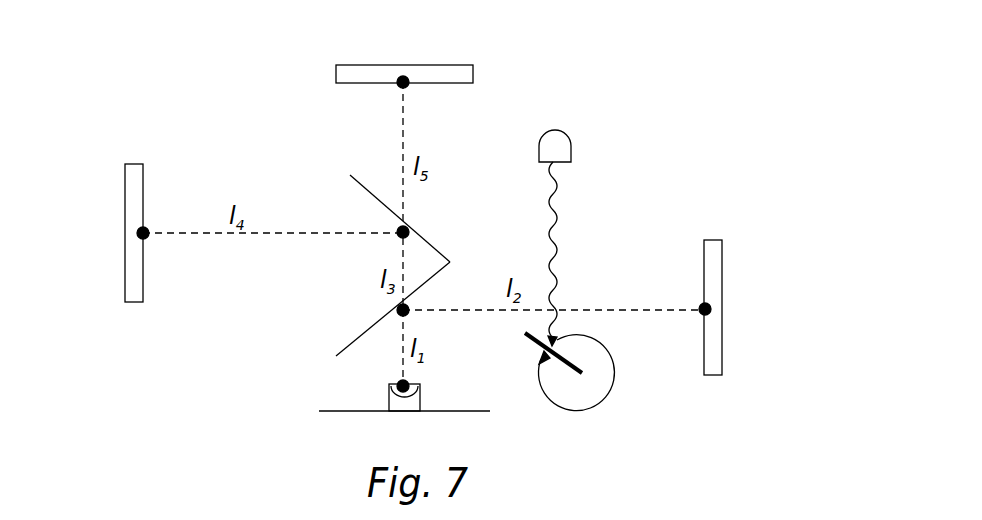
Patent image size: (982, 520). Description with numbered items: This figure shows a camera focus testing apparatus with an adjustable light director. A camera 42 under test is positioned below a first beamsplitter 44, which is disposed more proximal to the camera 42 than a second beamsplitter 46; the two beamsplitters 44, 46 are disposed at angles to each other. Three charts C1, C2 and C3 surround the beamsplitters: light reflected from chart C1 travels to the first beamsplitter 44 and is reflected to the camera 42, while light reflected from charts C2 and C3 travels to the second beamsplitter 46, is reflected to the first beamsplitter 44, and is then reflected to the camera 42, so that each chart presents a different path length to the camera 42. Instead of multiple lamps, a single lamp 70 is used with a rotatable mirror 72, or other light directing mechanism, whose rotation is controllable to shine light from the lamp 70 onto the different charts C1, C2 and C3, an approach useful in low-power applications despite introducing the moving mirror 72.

The camera 42 is at (415, 404).
The first beamsplitter 44 is at (360, 333).
The second beamsplitter 46 is at (372, 198).
The lamp 70 is at (572, 152).
The rotatable mirror 72 is at (572, 378).
The chart C1 is at (723, 296).
The chart C2 is at (462, 65).
The chart C3 is at (125, 192).